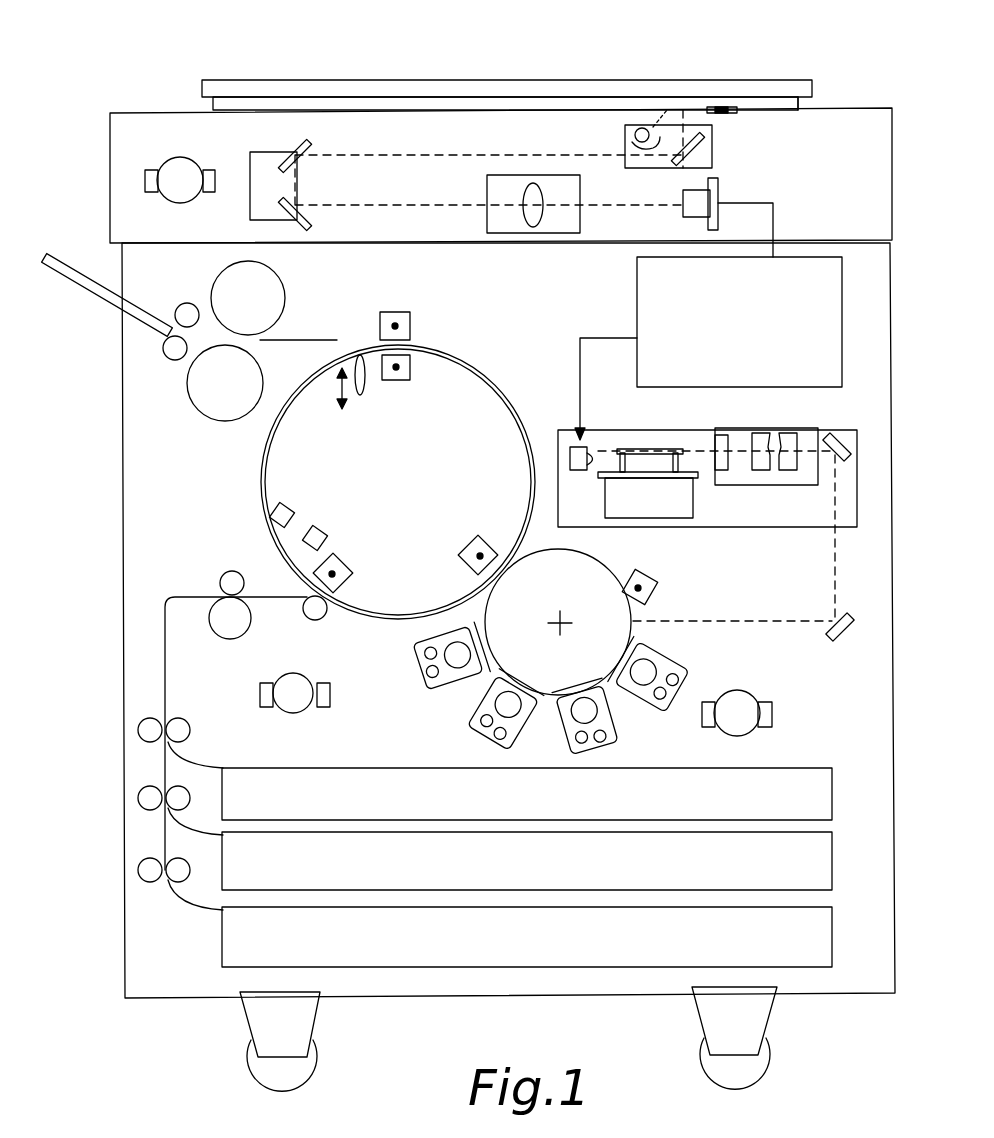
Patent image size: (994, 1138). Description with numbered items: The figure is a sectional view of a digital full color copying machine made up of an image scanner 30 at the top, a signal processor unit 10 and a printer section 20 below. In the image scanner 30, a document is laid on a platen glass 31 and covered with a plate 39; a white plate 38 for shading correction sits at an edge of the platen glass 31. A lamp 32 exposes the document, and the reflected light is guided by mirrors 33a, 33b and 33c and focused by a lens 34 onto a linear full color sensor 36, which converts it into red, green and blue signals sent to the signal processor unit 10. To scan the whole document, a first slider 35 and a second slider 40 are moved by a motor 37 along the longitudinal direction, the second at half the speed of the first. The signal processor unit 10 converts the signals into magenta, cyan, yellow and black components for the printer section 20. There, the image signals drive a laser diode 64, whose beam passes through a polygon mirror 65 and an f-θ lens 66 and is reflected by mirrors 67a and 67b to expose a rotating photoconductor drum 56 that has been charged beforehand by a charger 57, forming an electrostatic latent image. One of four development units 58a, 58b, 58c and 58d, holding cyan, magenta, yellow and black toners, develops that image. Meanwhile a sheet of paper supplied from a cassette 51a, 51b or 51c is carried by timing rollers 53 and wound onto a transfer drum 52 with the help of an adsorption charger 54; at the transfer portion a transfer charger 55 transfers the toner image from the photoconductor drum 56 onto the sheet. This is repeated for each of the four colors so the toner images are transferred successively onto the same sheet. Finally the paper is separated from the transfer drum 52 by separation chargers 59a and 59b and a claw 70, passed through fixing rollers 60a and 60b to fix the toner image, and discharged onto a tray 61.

The signal processor unit 10 is at (759, 334).
The printer section 20 is at (514, 294).
The image scanner 30 is at (857, 171).
The platen glass 31 is at (502, 108).
The lamp 32 is at (635, 137).
The mirror 33a is at (703, 140).
The mirror 33b is at (290, 145).
The mirror 33c is at (318, 222).
The lens 34 is at (490, 178).
The first slider 35 is at (675, 165).
The linear full color sensor 36 is at (683, 205).
The motor 37 is at (180, 157).
The white plate 38 is at (727, 108).
The plate 39 is at (782, 87).
The second slider 40 is at (250, 216).
The cassette 51a is at (541, 812).
The cassette 51b is at (541, 881).
The cassette 51c is at (541, 949).
The transfer drum 52 is at (260, 480).
The timing rollers 53 is at (222, 575).
The adsorption charger 54 is at (342, 557).
The transfer charger 55 is at (473, 540).
The photoconductor drum 56 is at (540, 657).
The charger 57 is at (667, 587).
The development unit 58a is at (425, 667).
The development unit 58b is at (472, 725).
The development unit 58c is at (612, 727).
The development unit 58d is at (663, 652).
The separation charger 59a is at (397, 312).
The separation charger 59b is at (403, 380).
The fixing roller 60a is at (285, 273).
The fixing roller 60b is at (225, 422).
The tray 61 is at (108, 305).
The laser diode 64 is at (573, 437).
The polygon mirror 65 is at (693, 503).
The f-θ lens 66 is at (790, 470).
The mirror 67a is at (842, 432).
The mirror 67b is at (838, 642).
The claw 70 is at (360, 392).